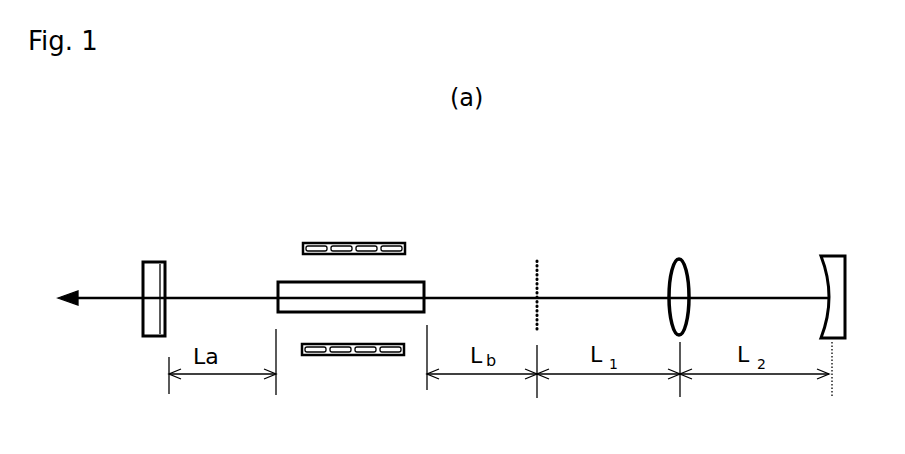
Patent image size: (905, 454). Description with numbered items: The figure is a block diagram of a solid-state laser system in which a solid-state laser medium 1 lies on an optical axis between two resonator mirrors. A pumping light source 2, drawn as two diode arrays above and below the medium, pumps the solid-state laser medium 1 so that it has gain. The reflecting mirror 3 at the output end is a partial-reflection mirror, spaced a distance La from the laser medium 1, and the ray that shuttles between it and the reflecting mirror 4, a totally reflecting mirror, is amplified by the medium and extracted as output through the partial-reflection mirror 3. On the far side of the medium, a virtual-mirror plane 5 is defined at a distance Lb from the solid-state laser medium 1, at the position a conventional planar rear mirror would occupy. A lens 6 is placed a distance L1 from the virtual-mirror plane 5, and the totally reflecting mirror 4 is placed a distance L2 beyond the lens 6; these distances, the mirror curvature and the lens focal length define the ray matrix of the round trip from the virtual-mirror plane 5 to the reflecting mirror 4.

The solid-state laser medium 1 is at (413, 281).
The pumping light source 2 is at (341, 243).
The reflecting mirror (partial-reflection mirror) 3 is at (153, 258).
The reflecting mirror (totally reflecting mirror) 4 is at (829, 254).
The virtual-mirror plane 5 is at (538, 240).
The lens 6 is at (677, 256).